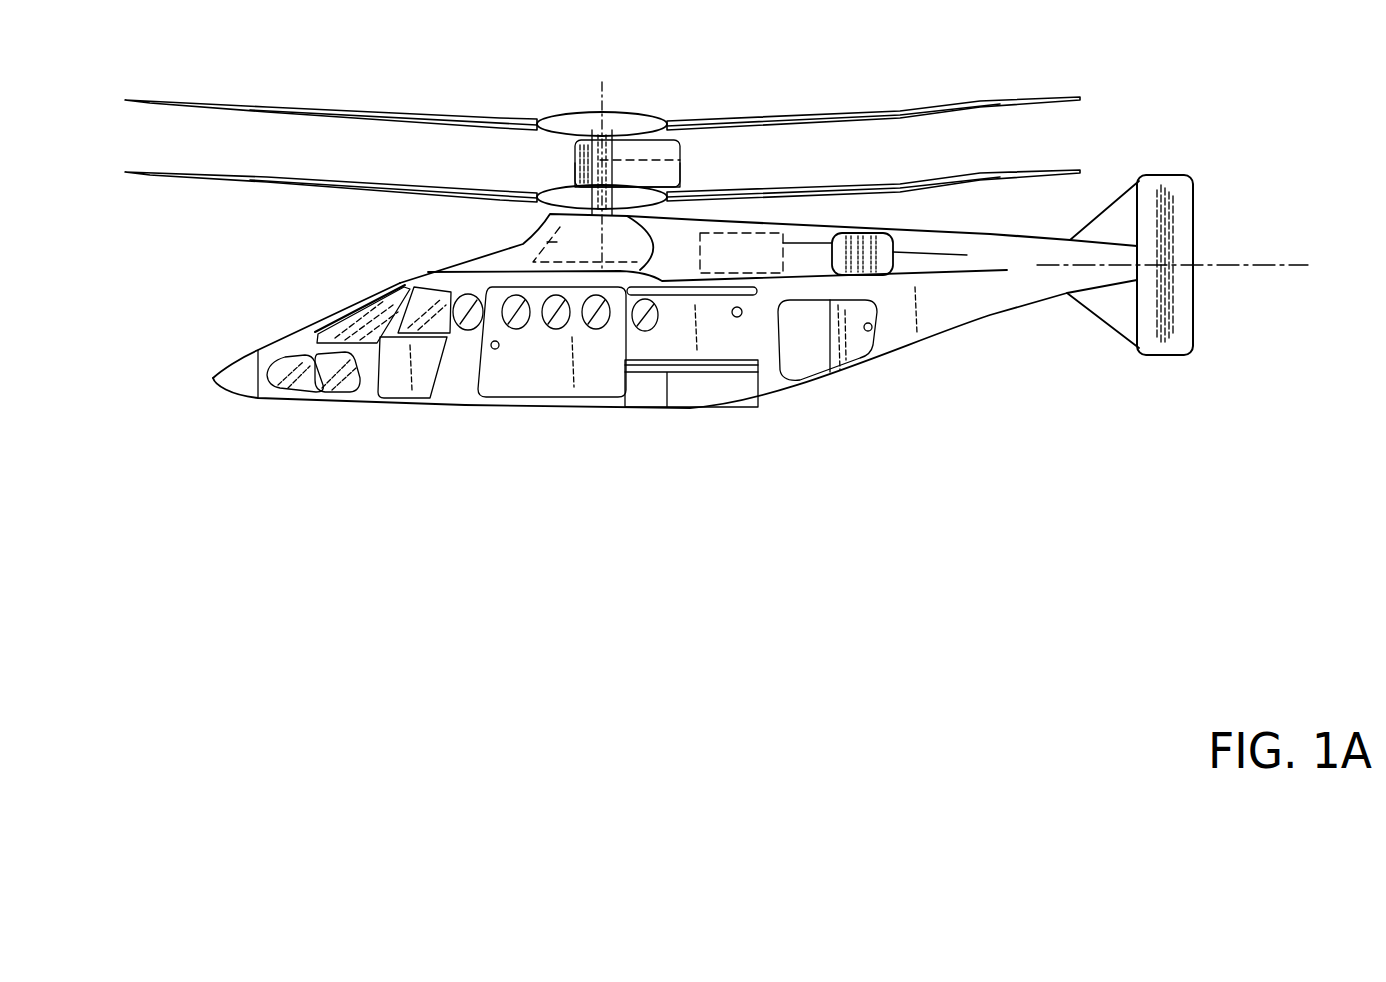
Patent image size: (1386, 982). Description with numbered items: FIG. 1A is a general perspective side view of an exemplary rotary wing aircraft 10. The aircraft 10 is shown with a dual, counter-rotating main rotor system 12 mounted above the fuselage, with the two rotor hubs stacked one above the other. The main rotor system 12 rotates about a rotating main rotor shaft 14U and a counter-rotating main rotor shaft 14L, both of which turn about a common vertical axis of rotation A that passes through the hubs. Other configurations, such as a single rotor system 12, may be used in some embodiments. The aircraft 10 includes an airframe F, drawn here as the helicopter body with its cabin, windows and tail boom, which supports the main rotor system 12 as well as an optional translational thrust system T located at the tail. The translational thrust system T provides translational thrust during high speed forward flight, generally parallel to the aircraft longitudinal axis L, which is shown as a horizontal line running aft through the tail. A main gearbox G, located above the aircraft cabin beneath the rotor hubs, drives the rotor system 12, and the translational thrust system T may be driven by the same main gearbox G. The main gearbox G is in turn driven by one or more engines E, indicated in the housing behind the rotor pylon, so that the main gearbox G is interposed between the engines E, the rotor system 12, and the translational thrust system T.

The rotary wing aircraft 10 is at (753, 61).
The main rotor system 12 is at (638, 109).
The rotating main rotor shaft 14U is at (682, 160).
The counter-rotating main rotor shaft 14L is at (719, 163).
The axis of rotation A is at (603, 97).
The airframe F is at (557, 371).
The main gearbox G is at (587, 243).
The engines E is at (664, 253).
The translational thrust system T is at (1172, 162).
The aircraft longitudinal axis L is at (1236, 268).